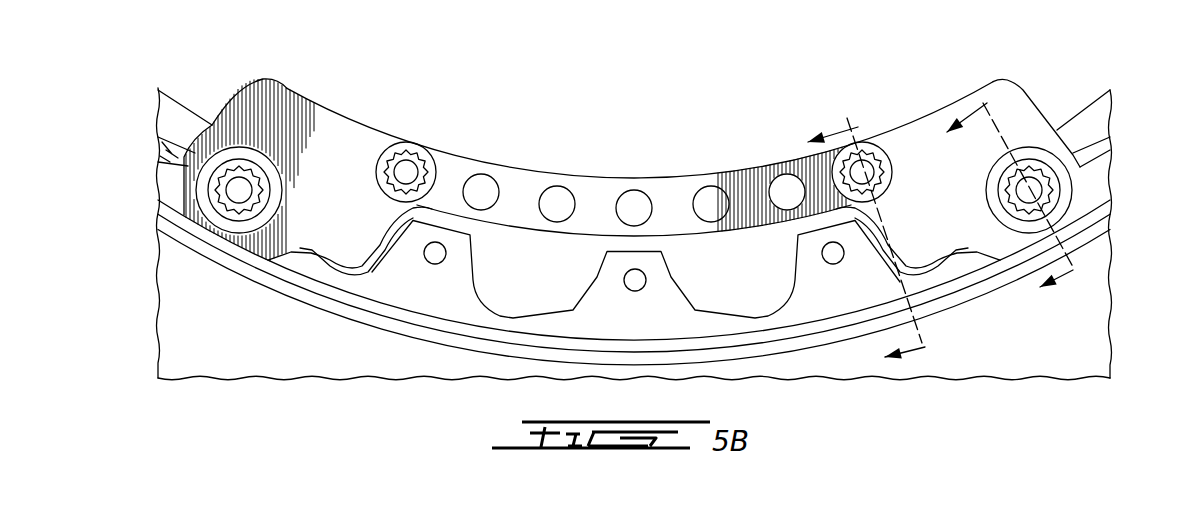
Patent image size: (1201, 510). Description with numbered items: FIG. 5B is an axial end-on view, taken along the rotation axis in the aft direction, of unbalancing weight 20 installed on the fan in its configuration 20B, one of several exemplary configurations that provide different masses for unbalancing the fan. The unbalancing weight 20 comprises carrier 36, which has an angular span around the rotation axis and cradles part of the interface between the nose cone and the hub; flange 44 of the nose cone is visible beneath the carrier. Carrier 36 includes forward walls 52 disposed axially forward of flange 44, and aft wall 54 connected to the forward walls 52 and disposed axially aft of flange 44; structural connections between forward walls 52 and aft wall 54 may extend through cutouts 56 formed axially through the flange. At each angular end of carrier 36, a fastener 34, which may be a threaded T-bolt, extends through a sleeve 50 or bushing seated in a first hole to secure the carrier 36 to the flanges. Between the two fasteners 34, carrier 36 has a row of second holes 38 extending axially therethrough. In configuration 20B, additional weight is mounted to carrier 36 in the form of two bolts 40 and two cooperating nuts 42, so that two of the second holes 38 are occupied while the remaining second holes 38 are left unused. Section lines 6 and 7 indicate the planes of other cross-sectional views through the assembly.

The section line 6- 6 is at (1020, 183).
The section line 7- 7 is at (877, 228).
The unbalancing weight 20 is at (782, 132).
The configuration of unbalancing weight 20B is at (781, 130).
The fasteners 34 is at (240, 190).
The carrier 36 is at (360, 140).
The second holes 38 is at (490, 190).
The bolts 40 is at (656, 122).
The nuts 42 is at (406, 172).
The flange of nose cone 44 is at (413, 250).
The sleeves 50 is at (210, 168).
The forward walls 52 is at (289, 118).
The aft wall 54 is at (634, 318).
The cutouts 56 is at (527, 290).